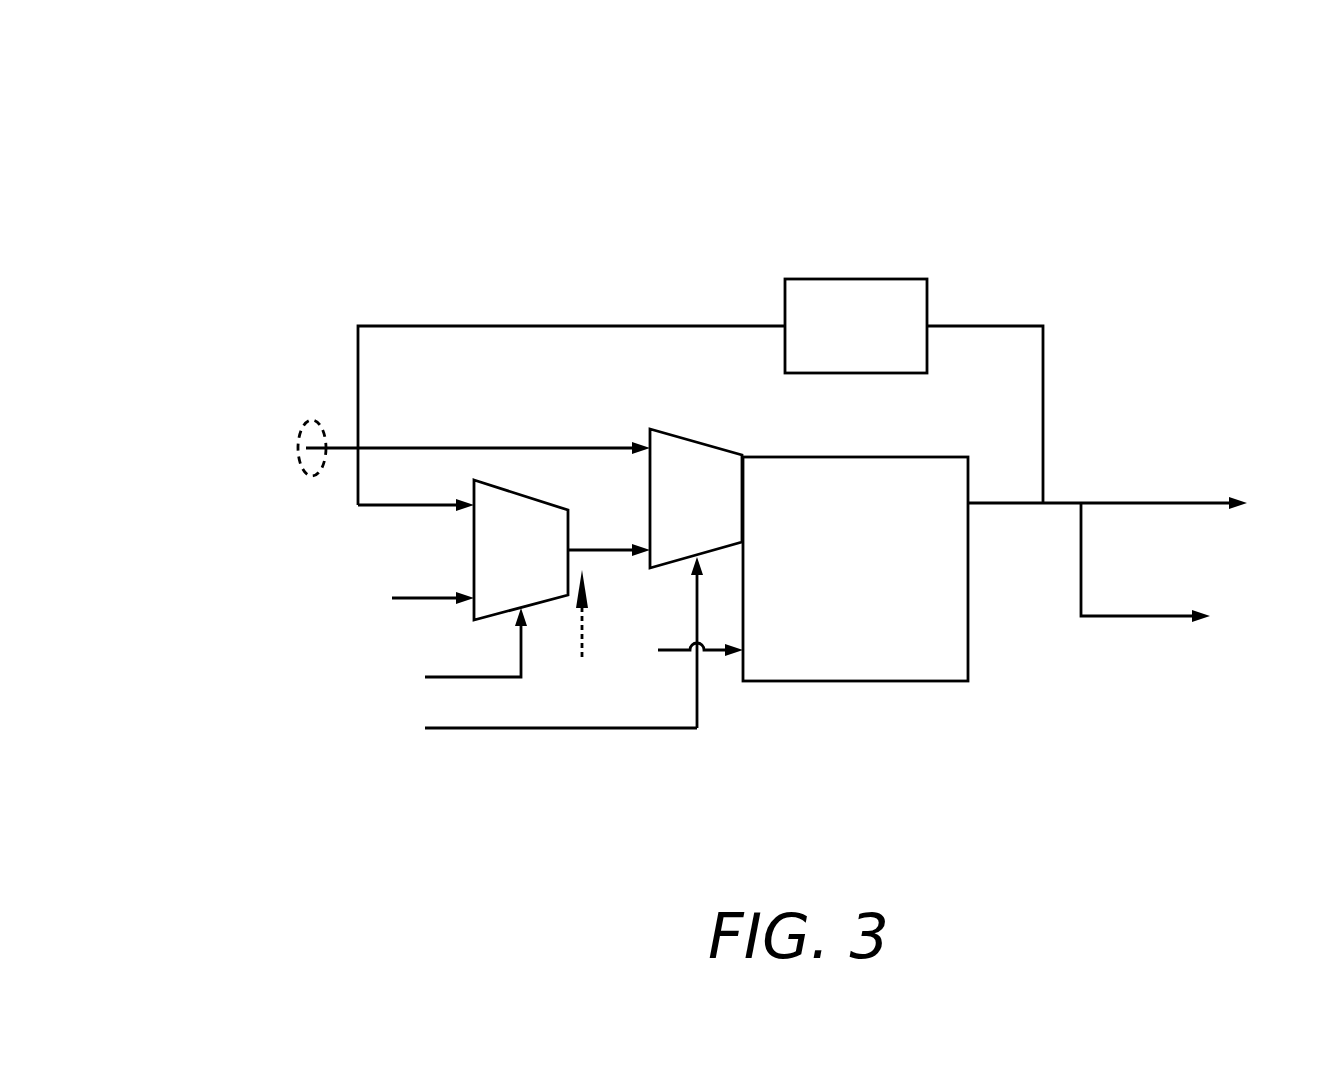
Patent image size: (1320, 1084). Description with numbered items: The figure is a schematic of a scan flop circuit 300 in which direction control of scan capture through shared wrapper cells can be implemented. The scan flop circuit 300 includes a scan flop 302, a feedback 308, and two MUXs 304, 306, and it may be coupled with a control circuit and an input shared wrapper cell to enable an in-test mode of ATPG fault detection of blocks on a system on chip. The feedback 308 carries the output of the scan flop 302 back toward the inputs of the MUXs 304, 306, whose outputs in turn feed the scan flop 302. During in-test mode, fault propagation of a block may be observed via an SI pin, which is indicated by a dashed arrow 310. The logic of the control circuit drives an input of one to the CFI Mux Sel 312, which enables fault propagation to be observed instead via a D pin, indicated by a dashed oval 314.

The scan flop circuit 300 is at (212, 75).
The scan flop 302 is at (855, 569).
The MUX 304 is at (655, 578).
The MUX 306 is at (437, 584).
The feedback 308 is at (700, 392).
The arrow 310 is at (575, 636).
The CFI Mux Sel 312 is at (465, 731).
The oval 314 is at (309, 421).